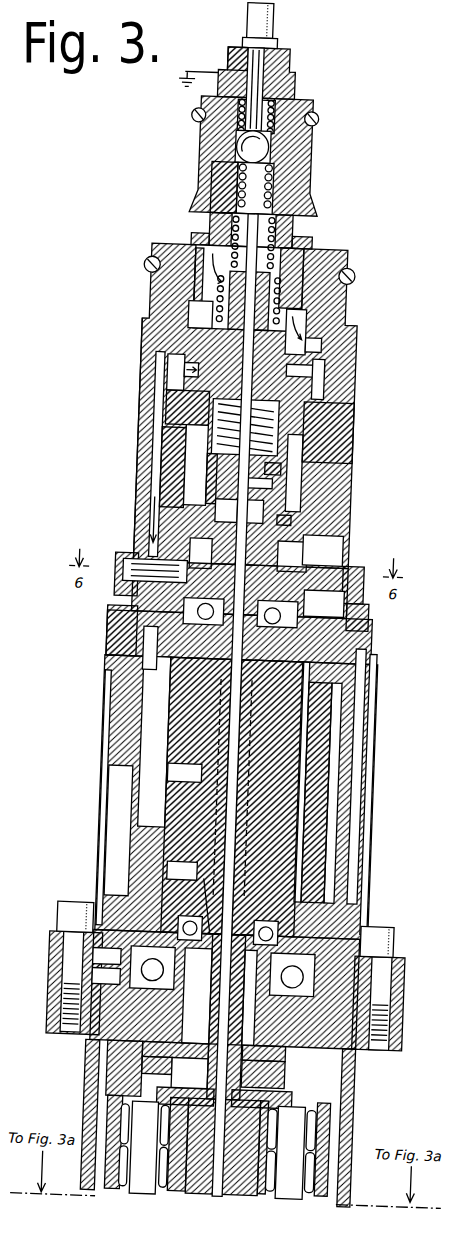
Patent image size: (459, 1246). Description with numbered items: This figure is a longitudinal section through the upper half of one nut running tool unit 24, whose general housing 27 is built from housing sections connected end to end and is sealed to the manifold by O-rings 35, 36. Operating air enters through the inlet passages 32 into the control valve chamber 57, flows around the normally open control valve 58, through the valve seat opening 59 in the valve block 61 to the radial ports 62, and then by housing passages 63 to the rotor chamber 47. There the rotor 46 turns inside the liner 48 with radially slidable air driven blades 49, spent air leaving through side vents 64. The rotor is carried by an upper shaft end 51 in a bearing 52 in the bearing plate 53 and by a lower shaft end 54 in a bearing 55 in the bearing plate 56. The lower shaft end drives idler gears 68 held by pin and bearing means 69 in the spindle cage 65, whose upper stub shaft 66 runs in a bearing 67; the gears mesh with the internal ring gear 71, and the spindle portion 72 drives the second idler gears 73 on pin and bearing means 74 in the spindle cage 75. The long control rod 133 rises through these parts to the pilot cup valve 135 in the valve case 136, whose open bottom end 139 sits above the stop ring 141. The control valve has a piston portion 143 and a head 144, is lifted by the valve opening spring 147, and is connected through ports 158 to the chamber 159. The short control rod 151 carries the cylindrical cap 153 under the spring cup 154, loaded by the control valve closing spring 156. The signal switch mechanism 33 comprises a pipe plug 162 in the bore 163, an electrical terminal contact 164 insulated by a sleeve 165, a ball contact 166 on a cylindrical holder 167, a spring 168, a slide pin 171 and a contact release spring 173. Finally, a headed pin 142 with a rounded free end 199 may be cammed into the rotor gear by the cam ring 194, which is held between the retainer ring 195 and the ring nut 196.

The nut running tool unit 24 is at (123, 363).
The general housing 27 is at (374, 248).
The inlet passages 32 is at (303, 221).
The signal switch mechanism 33 is at (241, 19).
The O-ring 35 is at (199, 119).
The O-ring 36 is at (154, 271).
The rotor 46 is at (196, 703).
The rotor chamber 47 is at (334, 776).
The liner 48 is at (356, 836).
The air driven blades 49 is at (332, 733).
The upper shaft end 51 is at (322, 550).
The bearing 52 is at (323, 623).
The bearing plate 53 is at (368, 635).
The lower shaft end 54 is at (189, 895).
The bearing 55 is at (365, 932).
The bearing plate 56 is at (173, 954).
The control valve chamber 57 is at (200, 236).
The control valve 58 is at (333, 343).
The valve seat opening 59 is at (326, 363).
The valve block 61 is at (338, 414).
The radial ports 62 is at (199, 375).
The housing passages 63 is at (182, 456).
The side vents 64 is at (147, 801).
The spindle cage 65 is at (175, 1092).
The upper stub shaft 66 is at (176, 982).
The bearing 67 is at (72, 980).
The idler gears 68 is at (157, 1065).
The pin and bearing means 69 is at (161, 1110).
The internal ring gear 71 is at (380, 1092).
The spindle portion 72 is at (153, 1143).
The idler gears 73 is at (379, 1169).
The pin and bearing means 74 is at (287, 1150).
The spindle cage 75 is at (145, 1147).
The long control rod 133 is at (197, 771).
The pilot cup valve 135 is at (299, 471).
The valve case 136 is at (290, 482).
The open bottom end 139 is at (291, 502).
The stop ring 141 is at (304, 521).
The headed pin 142 is at (141, 585).
The piston portion 143 is at (201, 423).
The head 144 is at (218, 347).
The valve opening spring 147 is at (311, 446).
The short control rod 151 is at (306, 389).
The cylindrical cap 153 is at (313, 310).
The spring cup 154 is at (365, 271).
The control valve closing spring 156 is at (216, 292).
The ports 158 is at (226, 492).
The chamber 159 is at (213, 474).
The pipe plug 162 is at (294, 61).
The bore 163 is at (299, 85).
The electrical terminal contact 164 is at (277, 31).
The sleeve 165 is at (232, 56).
The ball contact 166 is at (278, 150).
The cylindrical holder 167 is at (244, 174).
The spring 168 is at (279, 183).
The slide pin 171 is at (271, 242).
The contact release spring 173 is at (309, 108).
The cam ring 194 is at (383, 570).
The retainer ring 195 is at (155, 553).
The ring nut 196 is at (138, 638).
The rounded free end 199 is at (210, 147).